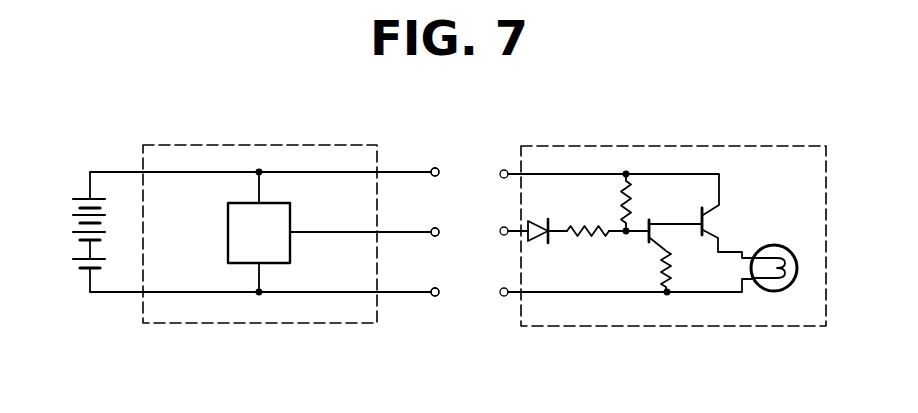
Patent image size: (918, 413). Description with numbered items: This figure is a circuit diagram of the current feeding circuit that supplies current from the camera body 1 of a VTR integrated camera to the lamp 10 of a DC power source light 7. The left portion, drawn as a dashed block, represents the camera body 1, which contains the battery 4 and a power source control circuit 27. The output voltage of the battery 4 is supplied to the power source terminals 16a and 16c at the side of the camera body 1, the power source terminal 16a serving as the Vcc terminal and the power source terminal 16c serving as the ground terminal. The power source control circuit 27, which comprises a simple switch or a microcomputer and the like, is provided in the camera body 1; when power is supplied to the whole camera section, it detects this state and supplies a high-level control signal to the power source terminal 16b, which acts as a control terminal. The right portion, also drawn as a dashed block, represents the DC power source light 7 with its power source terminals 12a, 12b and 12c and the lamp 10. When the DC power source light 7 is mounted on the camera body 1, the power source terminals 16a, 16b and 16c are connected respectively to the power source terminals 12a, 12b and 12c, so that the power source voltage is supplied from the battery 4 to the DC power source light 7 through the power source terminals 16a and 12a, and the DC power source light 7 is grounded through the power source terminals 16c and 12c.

The camera body 1 is at (167, 145).
The battery 4 is at (97, 296).
The power source control circuit 27 is at (277, 203).
The power source terminal 16a is at (435, 167).
The power source terminal 16b is at (435, 227).
The power source terminal 16c is at (435, 287).
The DC power source light 7 is at (684, 146).
The power source terminal 12a is at (504, 169).
The power source terminal 12b is at (503, 227).
The power source terminal 12c is at (503, 288).
The lamp 10 is at (777, 291).